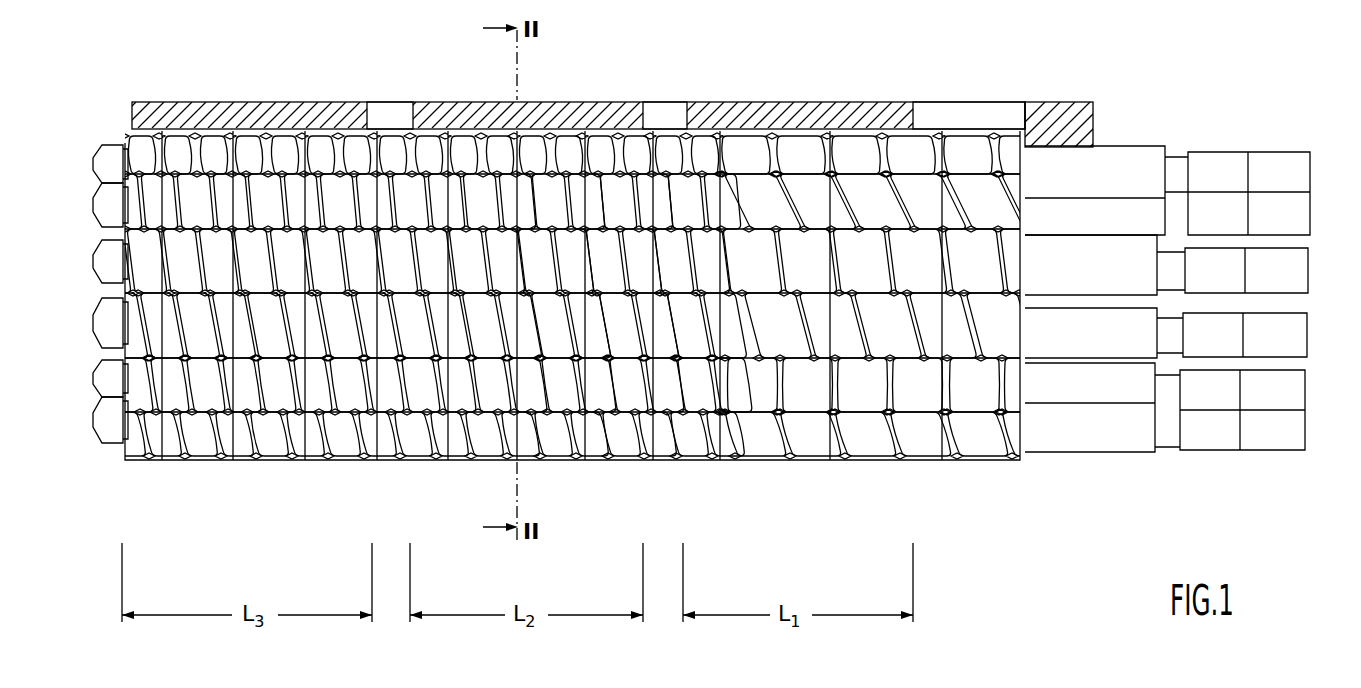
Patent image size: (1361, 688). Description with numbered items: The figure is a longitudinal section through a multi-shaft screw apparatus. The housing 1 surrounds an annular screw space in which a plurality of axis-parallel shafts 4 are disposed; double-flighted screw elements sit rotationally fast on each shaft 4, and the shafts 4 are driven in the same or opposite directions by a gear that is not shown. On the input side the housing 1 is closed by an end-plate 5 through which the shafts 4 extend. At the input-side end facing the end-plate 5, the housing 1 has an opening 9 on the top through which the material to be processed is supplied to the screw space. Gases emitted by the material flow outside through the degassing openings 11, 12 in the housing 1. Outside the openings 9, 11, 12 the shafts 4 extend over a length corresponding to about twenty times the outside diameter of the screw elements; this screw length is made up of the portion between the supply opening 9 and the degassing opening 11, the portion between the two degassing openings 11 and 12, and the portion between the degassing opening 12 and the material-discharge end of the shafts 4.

The housing 1 is at (205, 110).
The degassing opening 12 is at (388, 112).
The degassing opening 11 is at (668, 115).
The material supply opening 9 is at (953, 115).
The end-plate 5 is at (1068, 118).
The shaft 4 is at (1300, 175).